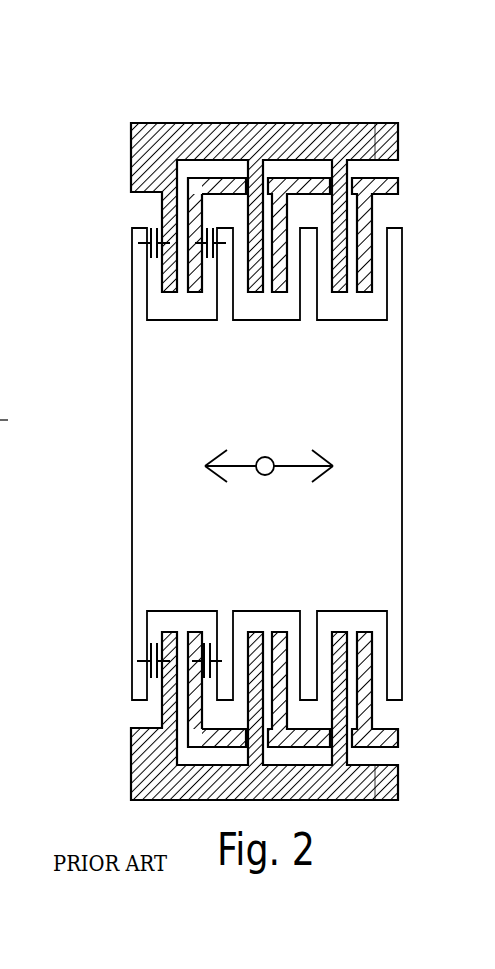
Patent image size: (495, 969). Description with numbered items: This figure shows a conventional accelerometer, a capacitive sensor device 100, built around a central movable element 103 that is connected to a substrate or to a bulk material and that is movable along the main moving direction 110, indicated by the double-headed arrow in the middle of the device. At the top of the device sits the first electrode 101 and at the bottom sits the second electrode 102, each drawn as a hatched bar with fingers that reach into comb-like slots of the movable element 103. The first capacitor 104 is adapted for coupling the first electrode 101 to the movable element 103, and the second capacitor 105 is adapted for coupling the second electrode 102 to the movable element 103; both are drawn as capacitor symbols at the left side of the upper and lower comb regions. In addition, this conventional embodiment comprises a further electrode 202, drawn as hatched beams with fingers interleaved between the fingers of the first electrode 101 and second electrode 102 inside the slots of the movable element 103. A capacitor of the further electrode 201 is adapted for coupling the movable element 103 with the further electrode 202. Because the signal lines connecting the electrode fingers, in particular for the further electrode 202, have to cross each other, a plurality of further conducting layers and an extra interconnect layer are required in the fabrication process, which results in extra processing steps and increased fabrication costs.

The capacitive sensor device 100 is at (300, 111).
The first electrode 101 is at (375, 123).
The second electrode 102 is at (398, 790).
The movable element 103 is at (392, 479).
The first capacitor 104 is at (143, 245).
The second capacitor 105 is at (148, 672).
The main moving direction 110 is at (290, 466).
The capacitor of the further electrode 201 is at (207, 257).
The further electrode 202 is at (398, 186).